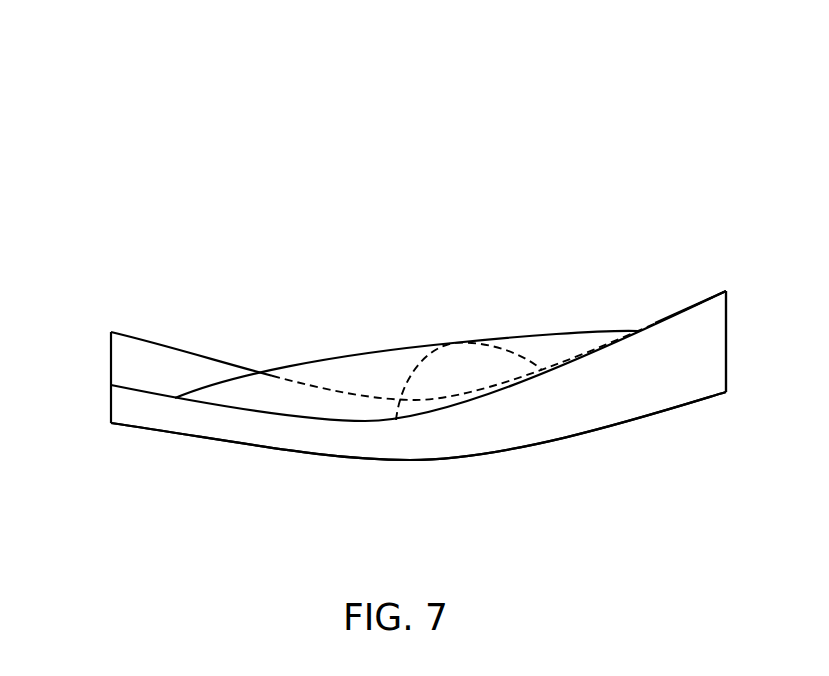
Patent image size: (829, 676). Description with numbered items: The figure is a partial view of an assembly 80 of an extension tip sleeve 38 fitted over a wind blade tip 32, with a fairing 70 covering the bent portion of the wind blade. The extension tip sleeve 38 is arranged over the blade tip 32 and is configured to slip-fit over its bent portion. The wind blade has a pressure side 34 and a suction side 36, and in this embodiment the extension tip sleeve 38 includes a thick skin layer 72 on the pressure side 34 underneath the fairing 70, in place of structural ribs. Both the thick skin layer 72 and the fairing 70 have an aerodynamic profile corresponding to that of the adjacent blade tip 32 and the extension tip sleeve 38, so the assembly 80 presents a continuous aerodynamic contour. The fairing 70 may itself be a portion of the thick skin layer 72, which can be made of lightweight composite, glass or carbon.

The assembly 80 is at (118, 166).
The blade tip 32 is at (713, 295).
The pressure side 34 is at (260, 316).
The suction side 36 is at (296, 473).
The extension tip sleeve 38 is at (182, 355).
The fairing 70 is at (555, 340).
The thick skin layer 72 is at (385, 362).